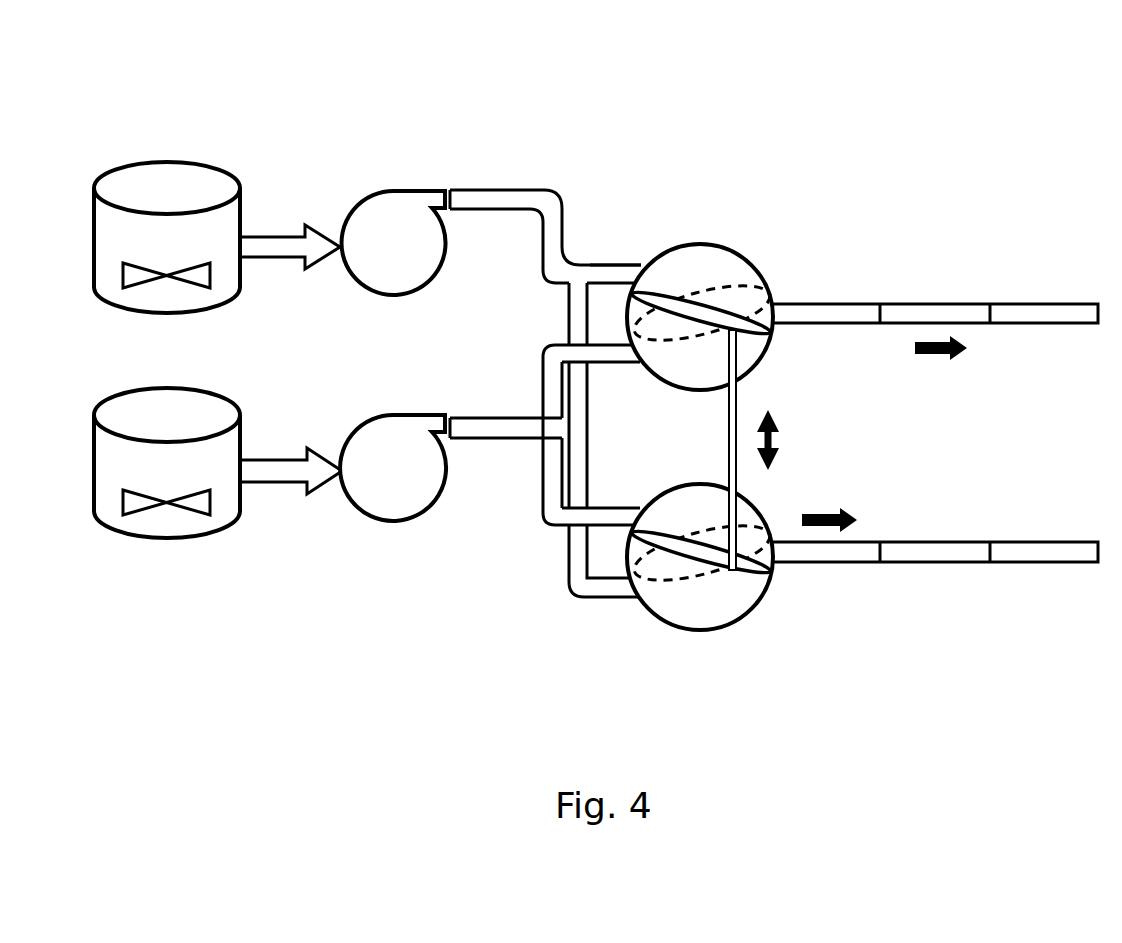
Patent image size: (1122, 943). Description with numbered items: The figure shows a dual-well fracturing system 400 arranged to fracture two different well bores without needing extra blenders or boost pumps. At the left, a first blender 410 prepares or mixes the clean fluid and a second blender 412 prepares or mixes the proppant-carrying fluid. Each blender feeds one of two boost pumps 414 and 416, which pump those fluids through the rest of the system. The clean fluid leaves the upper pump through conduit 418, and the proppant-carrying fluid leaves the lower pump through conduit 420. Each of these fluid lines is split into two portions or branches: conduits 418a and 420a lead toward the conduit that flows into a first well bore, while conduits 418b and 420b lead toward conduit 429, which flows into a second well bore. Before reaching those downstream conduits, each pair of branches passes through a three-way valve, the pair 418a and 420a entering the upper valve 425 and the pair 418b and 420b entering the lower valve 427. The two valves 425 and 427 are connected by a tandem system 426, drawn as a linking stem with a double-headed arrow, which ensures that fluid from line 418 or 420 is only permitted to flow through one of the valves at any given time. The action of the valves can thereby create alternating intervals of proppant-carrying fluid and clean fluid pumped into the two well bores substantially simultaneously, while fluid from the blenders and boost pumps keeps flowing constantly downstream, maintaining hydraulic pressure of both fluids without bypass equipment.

The fracturing system 400 is at (864, 73).
The first blender 410 is at (243, 277).
The second blender 412 is at (243, 500).
The boost pump 414 is at (404, 197).
The boost pump 416 is at (404, 424).
The conduit 418 is at (532, 188).
The conduit 418a is at (610, 265).
The conduit 418b is at (608, 598).
The conduit 420 is at (498, 440).
The conduit 420a is at (604, 364).
The conduit 420b is at (540, 523).
The three-way valve 425 is at (707, 296).
The tandem system 426 is at (738, 458).
The three-way valve 427 is at (702, 571).
The conduit 429 is at (825, 562).